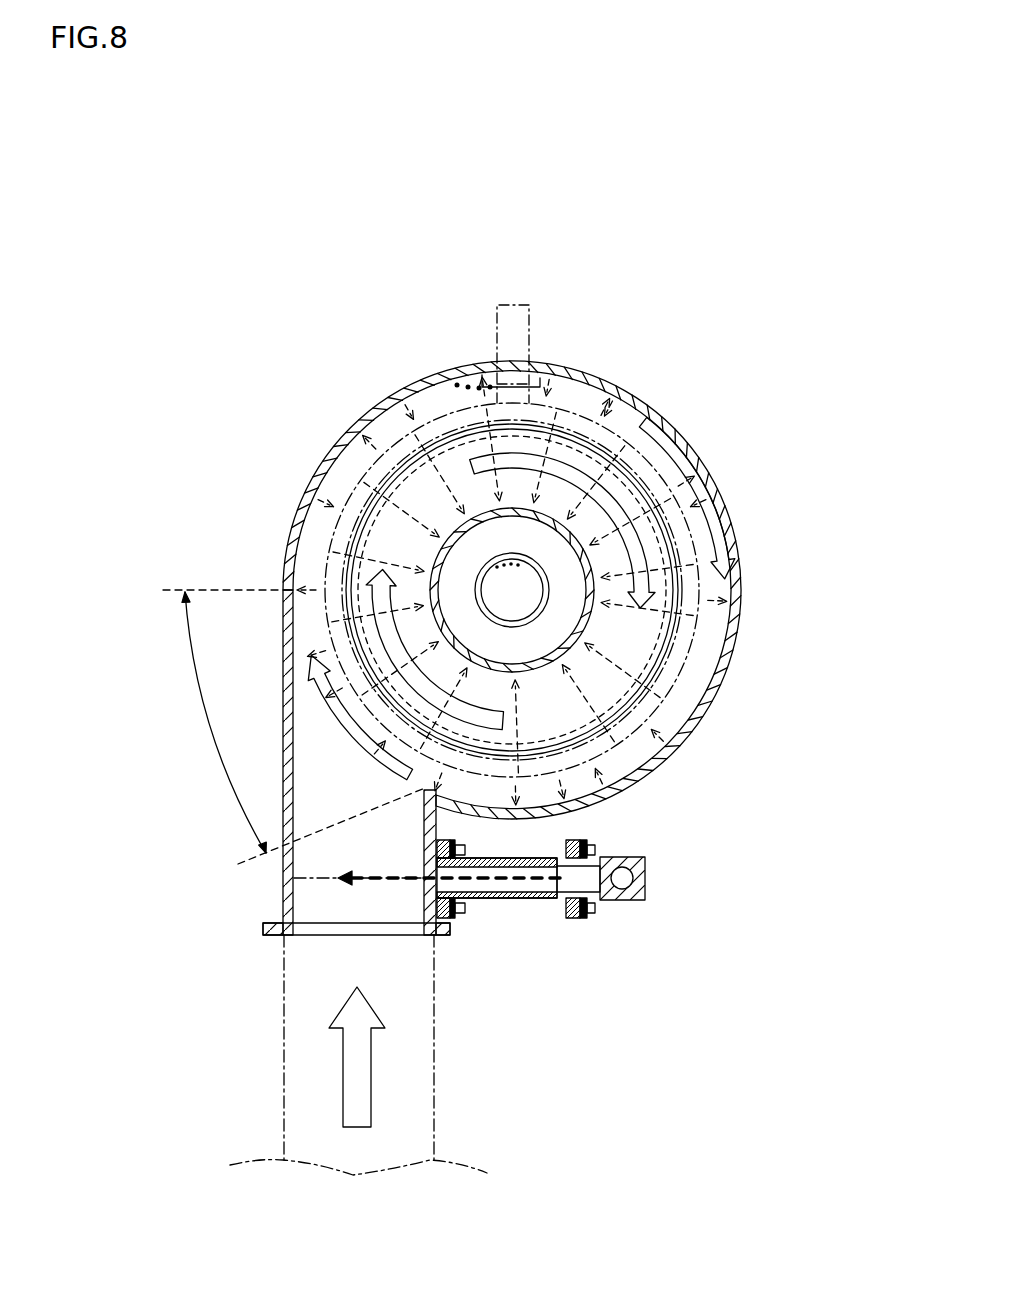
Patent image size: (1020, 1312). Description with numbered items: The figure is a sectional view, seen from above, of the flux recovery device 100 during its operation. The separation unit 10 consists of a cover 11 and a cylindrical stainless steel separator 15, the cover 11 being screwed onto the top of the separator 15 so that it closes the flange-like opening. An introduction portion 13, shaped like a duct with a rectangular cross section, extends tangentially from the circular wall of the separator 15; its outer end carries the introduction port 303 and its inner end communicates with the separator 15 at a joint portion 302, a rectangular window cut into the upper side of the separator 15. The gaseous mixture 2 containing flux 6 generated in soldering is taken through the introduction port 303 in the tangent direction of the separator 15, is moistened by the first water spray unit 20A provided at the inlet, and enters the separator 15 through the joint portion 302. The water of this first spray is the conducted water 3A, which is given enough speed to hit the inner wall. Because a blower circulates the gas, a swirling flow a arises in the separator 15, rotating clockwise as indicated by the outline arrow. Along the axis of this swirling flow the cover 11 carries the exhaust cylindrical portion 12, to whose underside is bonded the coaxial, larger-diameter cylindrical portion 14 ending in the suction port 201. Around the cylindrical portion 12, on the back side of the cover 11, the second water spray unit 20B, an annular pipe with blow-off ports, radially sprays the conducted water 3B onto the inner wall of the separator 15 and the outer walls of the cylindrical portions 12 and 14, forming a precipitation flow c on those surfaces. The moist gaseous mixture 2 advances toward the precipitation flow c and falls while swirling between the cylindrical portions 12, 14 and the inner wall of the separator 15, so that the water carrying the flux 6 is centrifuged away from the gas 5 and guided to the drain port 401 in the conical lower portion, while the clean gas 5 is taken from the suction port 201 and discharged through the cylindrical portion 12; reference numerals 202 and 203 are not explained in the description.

The flux recovery device 100 is at (165, 256).
The separation unit 10 is at (297, 496).
The cover 11 is at (581, 590).
The separator 15 is at (726, 517).
The exhaust cylindrical portion 12 is at (607, 601).
The introduction portion 13 is at (283, 810).
The cylindrical portion 14 is at (640, 507).
The first water spray unit 20A is at (598, 906).
The second water spray unit 20B is at (636, 385).
The suction port 201 is at (680, 727).
The hub ring 202 is at (629, 693).
The hub ring inner wall 203 is at (513, 650).
The joint portion 302 is at (210, 727).
The introduction port 303 is at (342, 925).
The drain port 401 is at (512, 603).
The conducted water 3A is at (360, 724).
The conducted water 3B is at (469, 422).
The flux 6 is at (372, 1078).
The precipitation flow c is at (462, 376).
The swirling flow a is at (283, 733).
The gaseous mixture 2 is at (404, 1055).
The gas 5 is at (404, 1055).